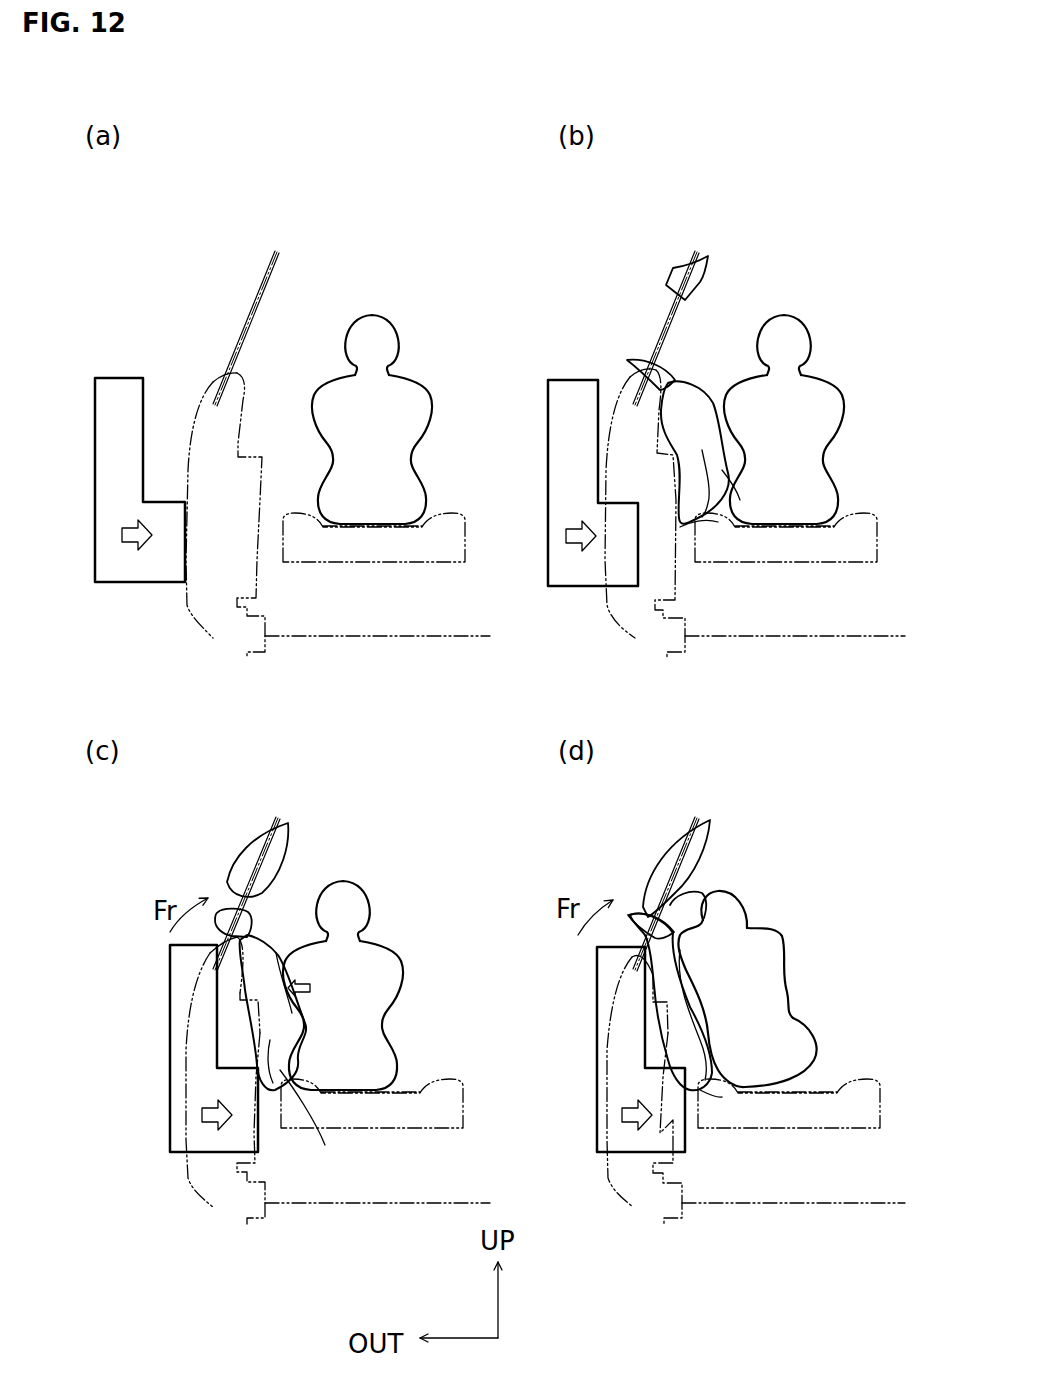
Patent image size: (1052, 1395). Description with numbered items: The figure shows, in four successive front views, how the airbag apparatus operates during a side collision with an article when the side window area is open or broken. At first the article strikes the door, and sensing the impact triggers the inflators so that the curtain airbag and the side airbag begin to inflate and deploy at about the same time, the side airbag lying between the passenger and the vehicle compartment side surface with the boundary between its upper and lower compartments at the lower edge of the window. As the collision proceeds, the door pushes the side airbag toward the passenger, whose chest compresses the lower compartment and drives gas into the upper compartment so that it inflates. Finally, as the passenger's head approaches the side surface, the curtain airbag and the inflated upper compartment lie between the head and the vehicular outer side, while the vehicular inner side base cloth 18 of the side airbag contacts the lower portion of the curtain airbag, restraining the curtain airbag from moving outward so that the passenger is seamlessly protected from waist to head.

The vehicular inner side base cloth 18 is at (683, 903).